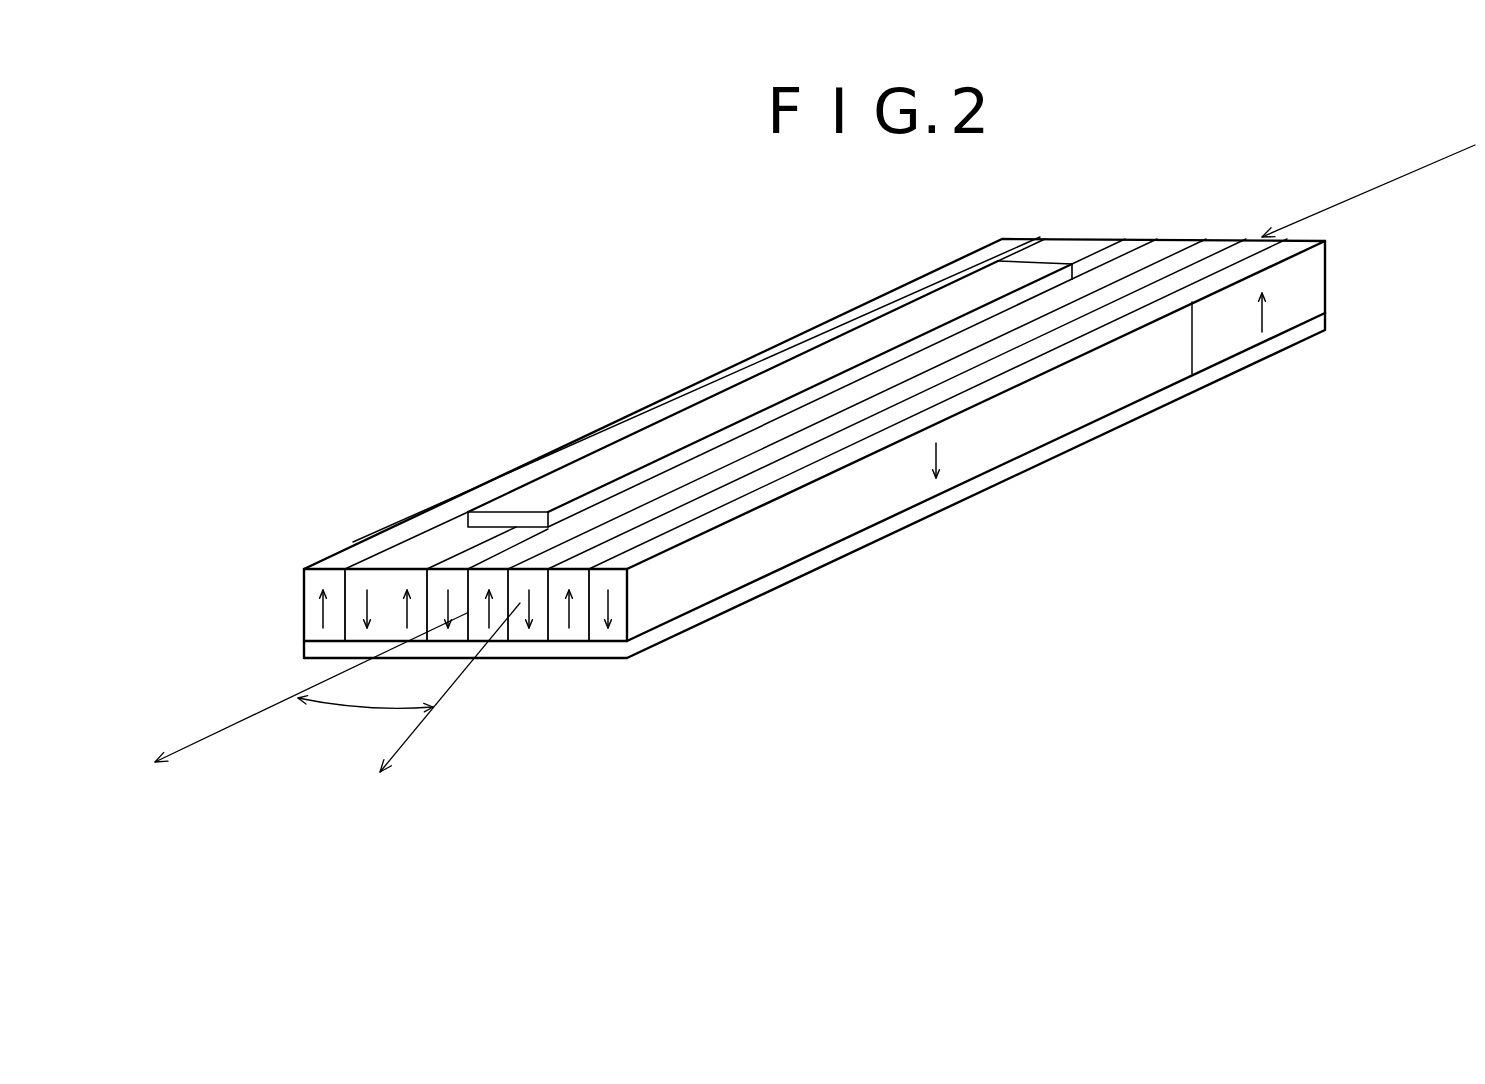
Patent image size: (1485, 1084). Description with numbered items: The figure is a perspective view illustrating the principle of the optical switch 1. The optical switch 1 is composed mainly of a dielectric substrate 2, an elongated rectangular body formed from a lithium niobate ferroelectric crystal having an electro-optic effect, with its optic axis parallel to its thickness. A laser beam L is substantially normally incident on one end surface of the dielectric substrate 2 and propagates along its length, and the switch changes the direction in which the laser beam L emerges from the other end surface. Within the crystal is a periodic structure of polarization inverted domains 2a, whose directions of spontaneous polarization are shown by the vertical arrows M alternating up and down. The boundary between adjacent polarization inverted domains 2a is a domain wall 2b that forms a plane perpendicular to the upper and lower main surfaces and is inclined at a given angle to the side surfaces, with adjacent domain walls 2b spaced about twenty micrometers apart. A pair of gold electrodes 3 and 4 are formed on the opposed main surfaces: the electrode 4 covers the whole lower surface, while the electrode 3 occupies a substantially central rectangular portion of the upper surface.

The optical switch 1 is at (815, 486).
The dielectric substrate 2 is at (814, 485).
The polarization inverted domains 2a is at (814, 513).
The domain wall 2b is at (1107, 328).
The electrode 3 is at (662, 436).
The electrode 4 is at (733, 597).
The vertical arrows M is at (1262, 318).
The laser beam L is at (1365, 193).